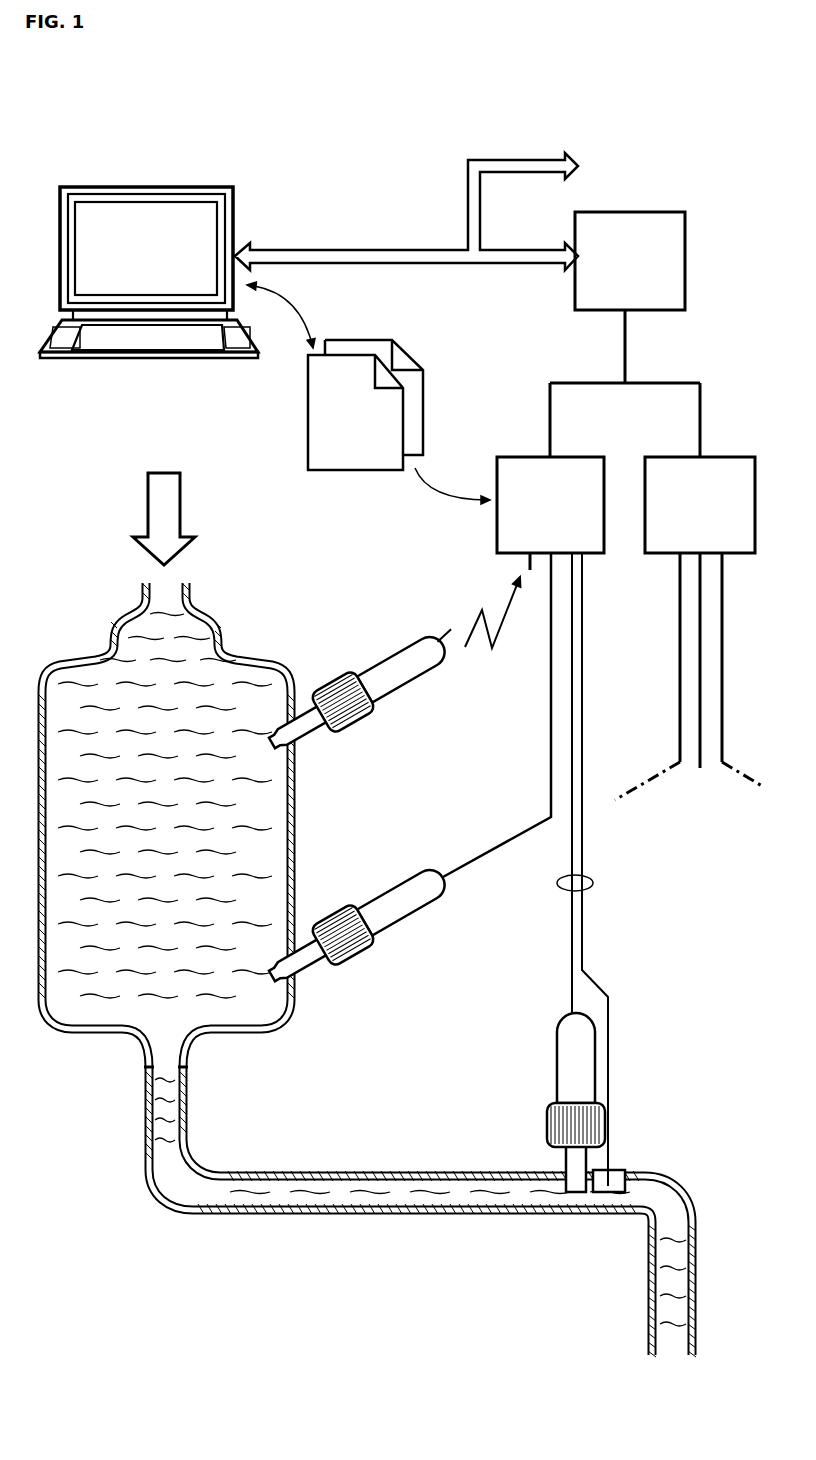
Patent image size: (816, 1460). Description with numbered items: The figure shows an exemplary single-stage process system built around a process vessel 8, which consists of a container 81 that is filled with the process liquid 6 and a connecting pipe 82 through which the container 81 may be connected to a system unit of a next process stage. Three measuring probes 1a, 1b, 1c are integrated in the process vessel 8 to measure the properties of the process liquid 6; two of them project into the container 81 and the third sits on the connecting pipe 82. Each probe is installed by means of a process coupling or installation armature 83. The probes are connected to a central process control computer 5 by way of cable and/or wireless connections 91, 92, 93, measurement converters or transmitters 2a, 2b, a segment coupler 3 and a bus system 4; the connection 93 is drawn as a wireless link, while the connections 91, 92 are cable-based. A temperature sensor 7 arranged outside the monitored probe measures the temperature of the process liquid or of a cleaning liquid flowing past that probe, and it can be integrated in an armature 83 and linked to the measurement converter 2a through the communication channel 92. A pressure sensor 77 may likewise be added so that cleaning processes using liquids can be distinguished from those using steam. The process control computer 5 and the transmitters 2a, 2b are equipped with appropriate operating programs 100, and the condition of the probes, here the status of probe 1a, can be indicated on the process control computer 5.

The measuring probe 1a is at (380, 650).
The measuring probe 1b is at (380, 878).
The measuring probe 1c is at (556, 1013).
The measurement converter 2a is at (550, 513).
The measurement converter 2b is at (688, 628).
The segment coupler 3 is at (630, 261).
The bus system 4 is at (375, 250).
The process control computer 5 is at (170, 182).
The process liquid 6 is at (238, 688).
The temperature sensor 7 is at (650, 1135).
The pressure sensor 77 is at (622, 1180).
The process vessel 8 is at (367, 970).
The container 81 is at (300, 845).
The connecting pipe 82 is at (350, 1170).
The installation armature 83 is at (320, 740).
The cable connection 91 is at (478, 868).
The communication channel 92 is at (590, 838).
The wireless connection 93 is at (482, 602).
The operating program 100 is at (365, 405).